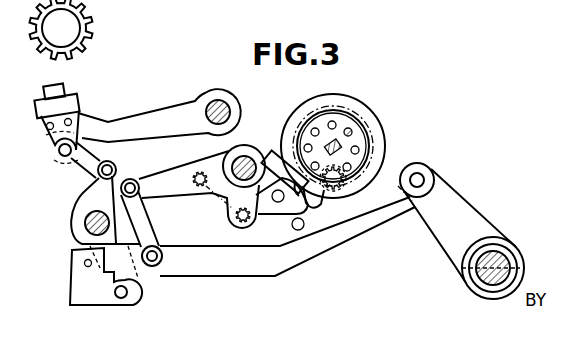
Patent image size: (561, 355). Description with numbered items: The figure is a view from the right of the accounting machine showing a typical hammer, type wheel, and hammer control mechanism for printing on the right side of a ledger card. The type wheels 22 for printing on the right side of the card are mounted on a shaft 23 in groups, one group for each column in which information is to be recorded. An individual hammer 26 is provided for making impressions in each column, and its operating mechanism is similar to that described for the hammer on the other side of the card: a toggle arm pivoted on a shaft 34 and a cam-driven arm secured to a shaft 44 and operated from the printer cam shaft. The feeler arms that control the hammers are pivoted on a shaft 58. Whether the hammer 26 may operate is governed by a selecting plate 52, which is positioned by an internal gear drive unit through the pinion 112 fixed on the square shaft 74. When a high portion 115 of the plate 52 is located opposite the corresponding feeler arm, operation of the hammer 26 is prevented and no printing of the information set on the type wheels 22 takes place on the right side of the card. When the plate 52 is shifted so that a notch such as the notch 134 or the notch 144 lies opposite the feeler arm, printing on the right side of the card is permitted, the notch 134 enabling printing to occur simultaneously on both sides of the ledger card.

The type wheels 22 is at (91, 24).
The shaft 23 is at (68, 33).
The hammer 26 is at (133, 121).
The shaft 34 is at (88, 216).
The shaft 44 is at (476, 279).
The plate 52 is at (352, 112).
The shaft 58 is at (238, 161).
The square shaft 74 is at (358, 171).
The pinion 112 is at (368, 148).
The high portion 115 is at (316, 193).
The notch 134 is at (328, 212).
The notch 144 is at (281, 160).